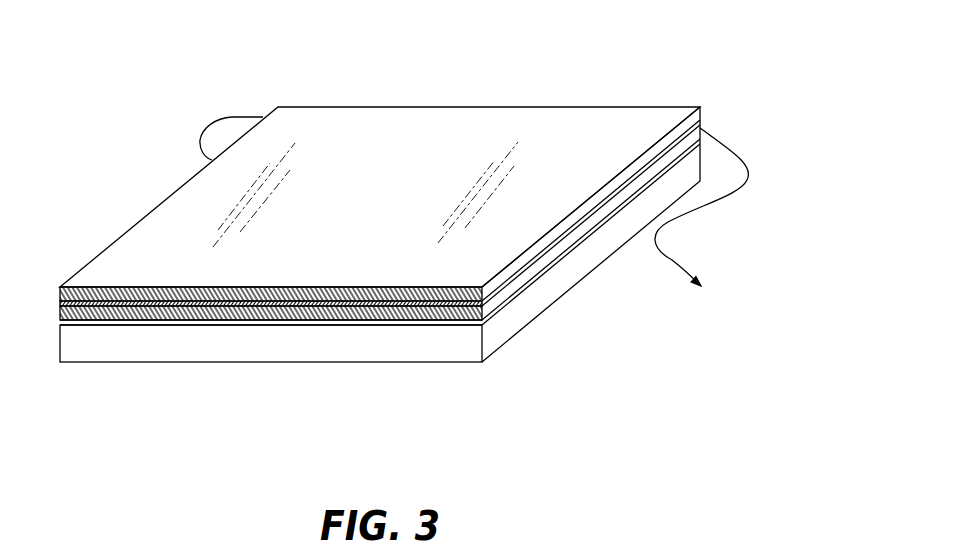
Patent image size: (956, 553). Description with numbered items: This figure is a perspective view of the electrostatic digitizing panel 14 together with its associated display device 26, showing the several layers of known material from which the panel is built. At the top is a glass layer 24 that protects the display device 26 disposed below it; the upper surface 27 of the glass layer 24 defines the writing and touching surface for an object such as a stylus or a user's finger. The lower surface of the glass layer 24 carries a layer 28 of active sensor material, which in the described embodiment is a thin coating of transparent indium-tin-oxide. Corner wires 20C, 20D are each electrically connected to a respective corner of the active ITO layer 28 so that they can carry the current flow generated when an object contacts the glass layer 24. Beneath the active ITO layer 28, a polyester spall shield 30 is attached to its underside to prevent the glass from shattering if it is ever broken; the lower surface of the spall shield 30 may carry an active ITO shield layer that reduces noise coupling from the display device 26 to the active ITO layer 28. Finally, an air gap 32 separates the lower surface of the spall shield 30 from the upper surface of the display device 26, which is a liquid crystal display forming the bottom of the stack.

The electrostatic digitizing panel 14 is at (432, 238).
The corner wire 20C is at (228, 117).
The corner wire 20D is at (672, 257).
The upper surface 27 is at (447, 123).
The glass layer 24 is at (123, 313).
The active ITO layer 28 is at (120, 312).
The polyester spall shield 30 is at (297, 313).
The air gap 32 is at (202, 326).
The display device 26 is at (442, 347).